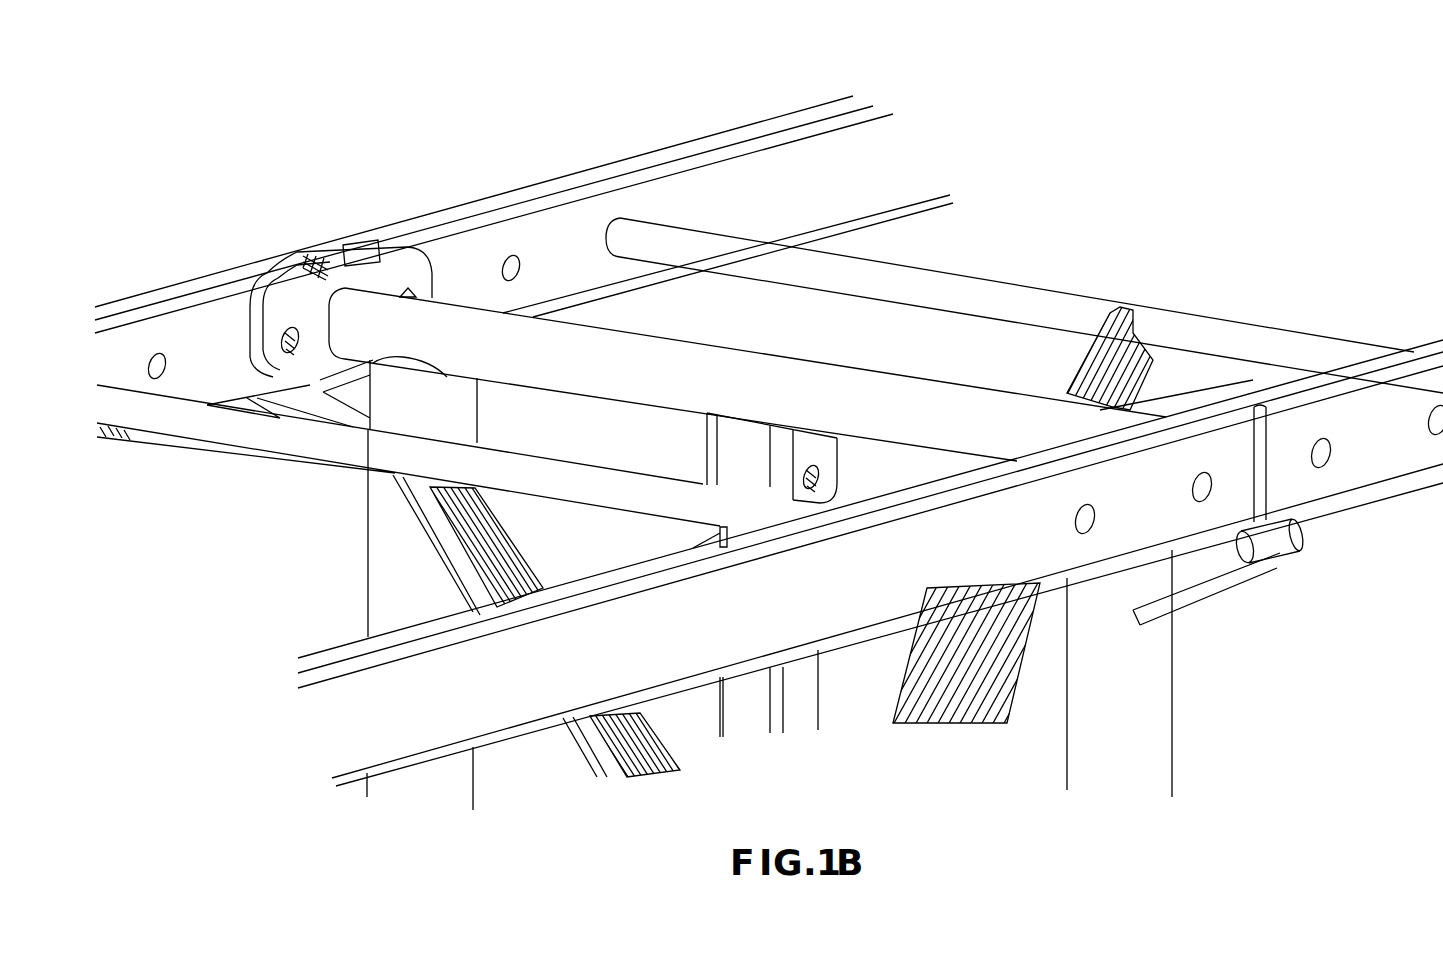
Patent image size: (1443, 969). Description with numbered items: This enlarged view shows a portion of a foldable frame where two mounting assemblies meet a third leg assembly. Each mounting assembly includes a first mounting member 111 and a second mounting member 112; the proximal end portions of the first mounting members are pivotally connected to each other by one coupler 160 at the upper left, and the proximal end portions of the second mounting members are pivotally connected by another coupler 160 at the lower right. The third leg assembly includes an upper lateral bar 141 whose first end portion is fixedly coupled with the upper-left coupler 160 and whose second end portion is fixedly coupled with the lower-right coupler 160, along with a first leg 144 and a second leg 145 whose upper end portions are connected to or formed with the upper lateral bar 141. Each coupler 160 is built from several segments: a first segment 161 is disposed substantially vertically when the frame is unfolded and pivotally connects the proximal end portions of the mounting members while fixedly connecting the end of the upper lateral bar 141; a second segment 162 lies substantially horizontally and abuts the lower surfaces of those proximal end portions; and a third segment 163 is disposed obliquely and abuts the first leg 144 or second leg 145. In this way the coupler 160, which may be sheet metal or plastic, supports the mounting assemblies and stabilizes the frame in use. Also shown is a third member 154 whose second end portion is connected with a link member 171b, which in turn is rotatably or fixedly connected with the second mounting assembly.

The first mounting member 111 is at (178, 342).
The second mounting member 112 is at (855, 607).
The upper lateral bar 141 is at (603, 357).
The first leg 144 is at (385, 563).
The second leg 145 is at (1107, 652).
The third member 154 is at (1090, 373).
The coupler 160 is at (372, 245).
The first segment 161 is at (308, 298).
The second segment 162 is at (308, 385).
The third segment 163 is at (330, 475).
The link member 171b is at (735, 247).